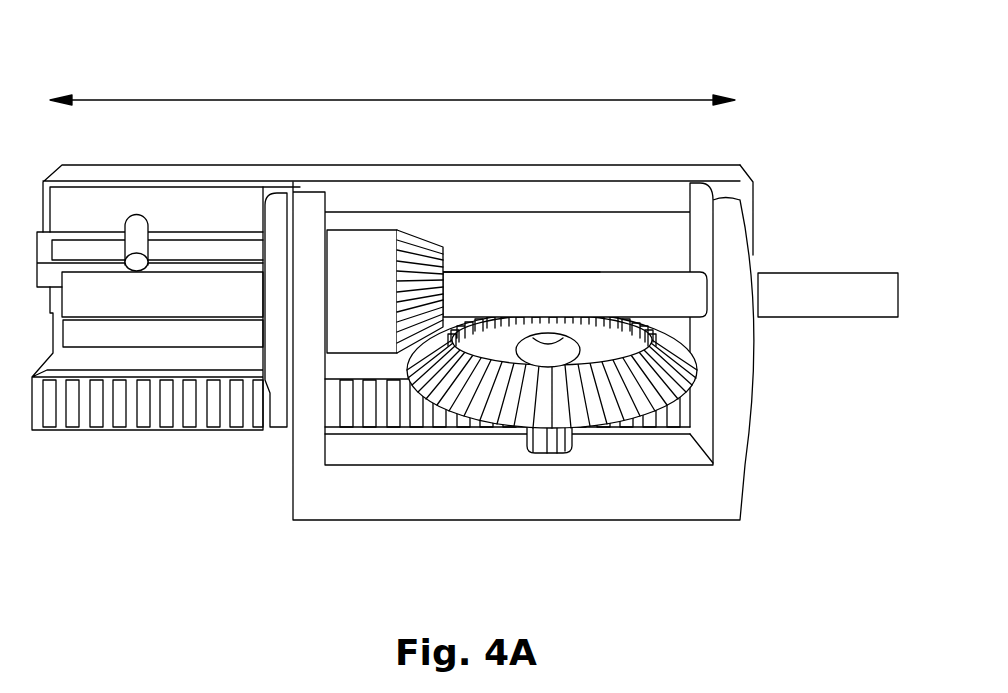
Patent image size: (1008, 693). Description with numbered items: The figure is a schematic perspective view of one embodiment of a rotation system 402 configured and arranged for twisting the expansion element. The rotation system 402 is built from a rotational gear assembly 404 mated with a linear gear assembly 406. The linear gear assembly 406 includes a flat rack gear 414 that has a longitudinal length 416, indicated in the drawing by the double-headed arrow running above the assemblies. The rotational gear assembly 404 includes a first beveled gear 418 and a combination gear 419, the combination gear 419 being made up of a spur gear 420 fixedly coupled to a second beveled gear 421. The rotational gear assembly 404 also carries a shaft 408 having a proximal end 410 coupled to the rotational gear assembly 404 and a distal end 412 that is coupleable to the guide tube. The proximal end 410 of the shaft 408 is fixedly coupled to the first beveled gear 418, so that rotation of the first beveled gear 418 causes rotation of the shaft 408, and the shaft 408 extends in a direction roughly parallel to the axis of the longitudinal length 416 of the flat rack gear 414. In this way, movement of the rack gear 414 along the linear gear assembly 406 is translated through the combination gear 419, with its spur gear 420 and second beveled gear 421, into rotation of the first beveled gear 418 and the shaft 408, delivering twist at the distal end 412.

The rotation system 402 is at (467, 352).
The rotational gear assembly 404 is at (538, 377).
The linear gear assembly 406 is at (387, 380).
The shaft 408 is at (600, 292).
The proximal end 410 is at (463, 283).
The distal end 412 is at (863, 287).
The flat rack gear 414 is at (153, 438).
The longitudinal length 416 is at (274, 100).
The first beveled gear 418 is at (400, 232).
The combination gear 419 is at (710, 383).
The spur gear 420 is at (575, 437).
The second beveled gear 421 is at (417, 382).